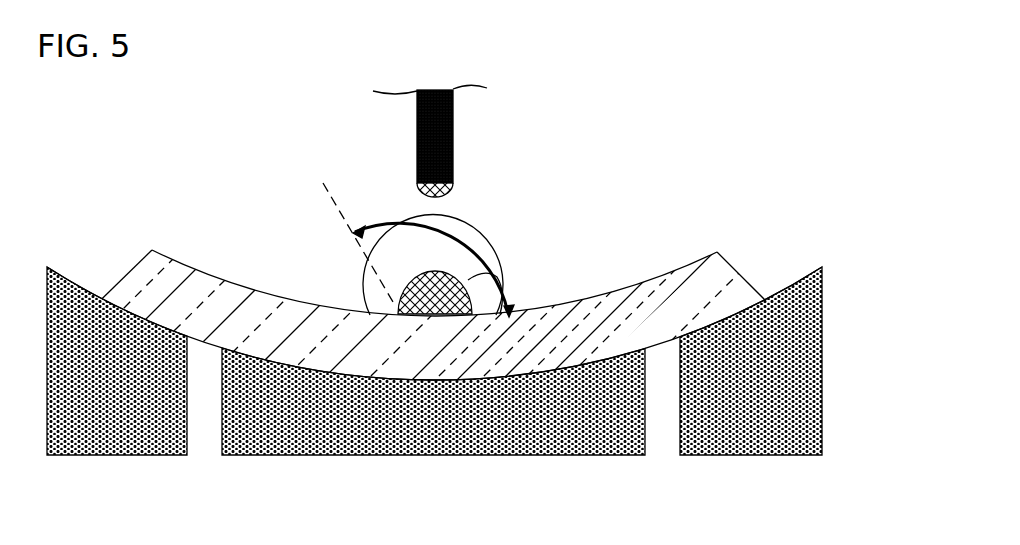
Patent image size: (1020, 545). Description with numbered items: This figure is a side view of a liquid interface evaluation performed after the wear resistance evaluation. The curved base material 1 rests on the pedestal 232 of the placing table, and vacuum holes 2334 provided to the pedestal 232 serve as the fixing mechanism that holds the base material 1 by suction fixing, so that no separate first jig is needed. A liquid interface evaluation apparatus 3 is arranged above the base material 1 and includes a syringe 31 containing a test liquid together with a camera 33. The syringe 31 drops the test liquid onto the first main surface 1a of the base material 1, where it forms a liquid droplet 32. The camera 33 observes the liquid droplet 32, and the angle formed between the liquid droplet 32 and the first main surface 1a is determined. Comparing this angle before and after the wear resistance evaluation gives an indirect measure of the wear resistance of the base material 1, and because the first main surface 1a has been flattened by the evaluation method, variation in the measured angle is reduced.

The base material 1 is at (748, 283).
The first main surface 1a is at (166, 253).
The liquid interface evaluation apparatus 3 is at (661, 121).
The syringe 31 is at (418, 153).
The liquid droplet 32 is at (503, 270).
The camera 33 is at (366, 286).
The pedestal 232 is at (448, 397).
The vacuum holes 2334 is at (207, 433).